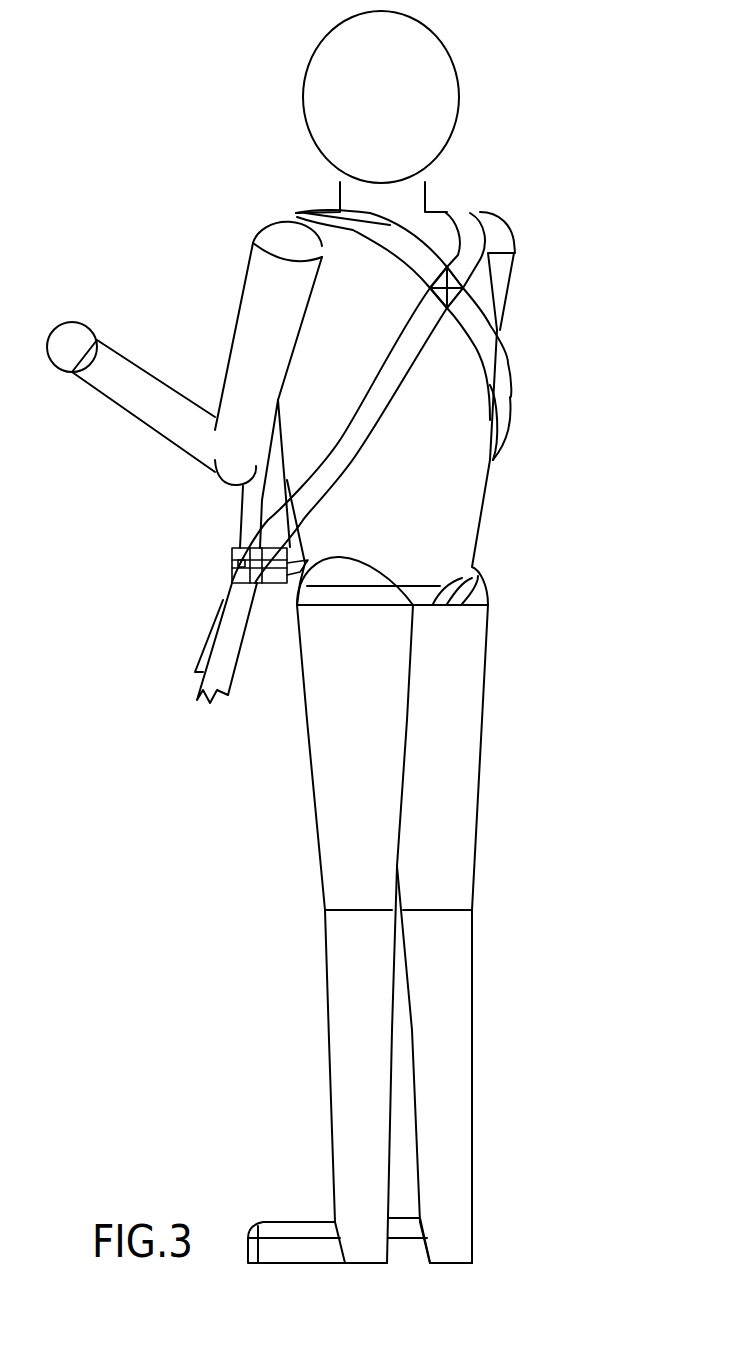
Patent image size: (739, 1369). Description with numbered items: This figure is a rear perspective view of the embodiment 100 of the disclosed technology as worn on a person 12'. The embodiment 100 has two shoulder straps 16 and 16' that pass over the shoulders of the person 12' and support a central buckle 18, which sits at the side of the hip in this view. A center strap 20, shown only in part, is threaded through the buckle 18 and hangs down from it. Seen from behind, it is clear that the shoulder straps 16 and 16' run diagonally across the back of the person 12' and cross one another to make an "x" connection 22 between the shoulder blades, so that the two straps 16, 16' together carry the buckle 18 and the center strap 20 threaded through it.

The embodiment 100 is at (226, 137).
The person 12' is at (417, 97).
The shoulder strap 16 is at (393, 372).
The shoulder strap 16' is at (362, 328).
The central buckle 18 is at (232, 562).
The center strap 20 is at (215, 685).
The "x" connection 22 is at (455, 288).